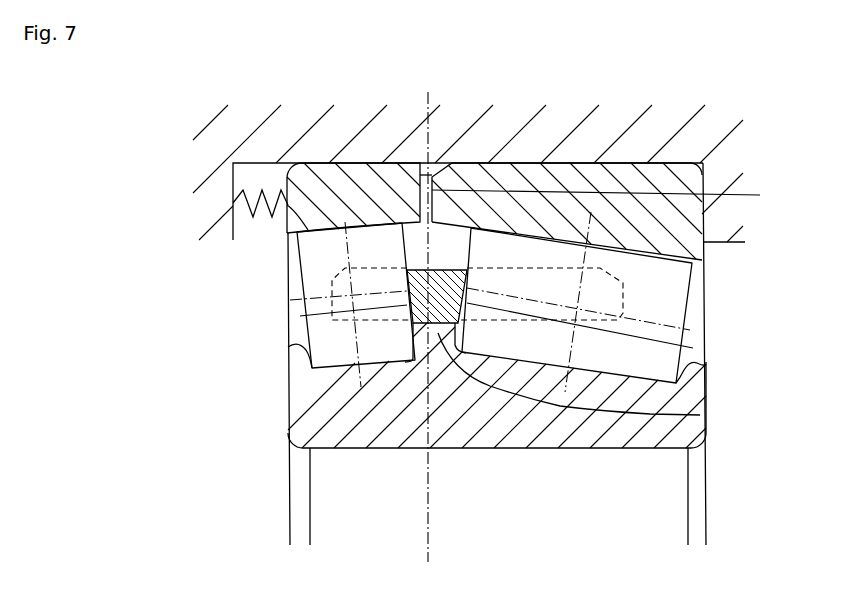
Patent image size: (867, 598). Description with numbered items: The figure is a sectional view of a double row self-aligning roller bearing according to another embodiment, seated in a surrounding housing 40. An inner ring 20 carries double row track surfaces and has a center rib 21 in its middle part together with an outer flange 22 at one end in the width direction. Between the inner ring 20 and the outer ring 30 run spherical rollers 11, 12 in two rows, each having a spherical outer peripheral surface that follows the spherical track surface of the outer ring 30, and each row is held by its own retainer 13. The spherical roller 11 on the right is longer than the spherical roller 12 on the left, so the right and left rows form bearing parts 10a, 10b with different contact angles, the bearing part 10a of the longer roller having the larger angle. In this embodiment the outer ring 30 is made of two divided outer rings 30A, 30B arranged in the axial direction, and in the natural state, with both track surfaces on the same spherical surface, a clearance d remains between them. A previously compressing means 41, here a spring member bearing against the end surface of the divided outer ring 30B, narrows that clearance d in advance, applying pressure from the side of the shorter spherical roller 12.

The housing 40 is at (725, 157).
The previously compressing means 41 is at (237, 200).
The outer ring 30 is at (510, 64).
The divided outer ring 30A is at (478, 173).
The divided outer ring 30B is at (381, 190).
The clearance d is at (605, 195).
The spherical roller 11 is at (668, 288).
The spherical roller 12 is at (313, 278).
The retainer 13 is at (300, 316).
The inner ring 20 is at (325, 412).
The center rib 21 is at (700, 415).
The outer flange 22 is at (693, 368).
The bearing part 10a is at (435, 552).
The bearing part 10b is at (428, 552).